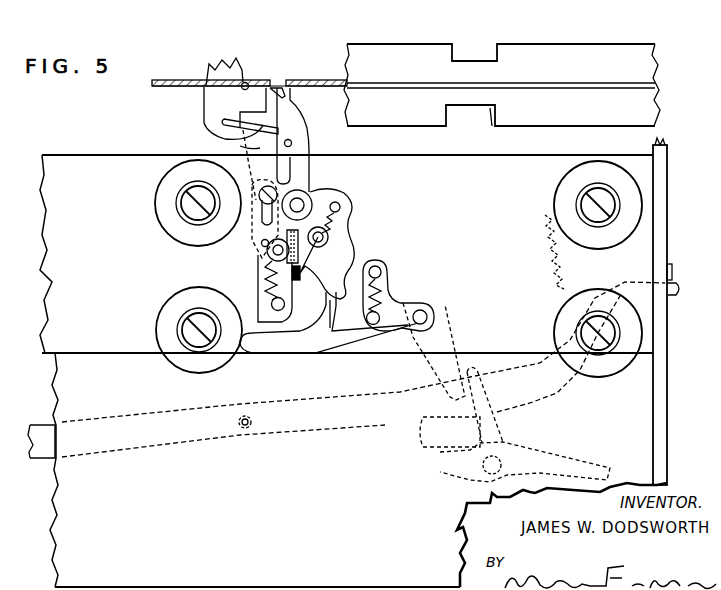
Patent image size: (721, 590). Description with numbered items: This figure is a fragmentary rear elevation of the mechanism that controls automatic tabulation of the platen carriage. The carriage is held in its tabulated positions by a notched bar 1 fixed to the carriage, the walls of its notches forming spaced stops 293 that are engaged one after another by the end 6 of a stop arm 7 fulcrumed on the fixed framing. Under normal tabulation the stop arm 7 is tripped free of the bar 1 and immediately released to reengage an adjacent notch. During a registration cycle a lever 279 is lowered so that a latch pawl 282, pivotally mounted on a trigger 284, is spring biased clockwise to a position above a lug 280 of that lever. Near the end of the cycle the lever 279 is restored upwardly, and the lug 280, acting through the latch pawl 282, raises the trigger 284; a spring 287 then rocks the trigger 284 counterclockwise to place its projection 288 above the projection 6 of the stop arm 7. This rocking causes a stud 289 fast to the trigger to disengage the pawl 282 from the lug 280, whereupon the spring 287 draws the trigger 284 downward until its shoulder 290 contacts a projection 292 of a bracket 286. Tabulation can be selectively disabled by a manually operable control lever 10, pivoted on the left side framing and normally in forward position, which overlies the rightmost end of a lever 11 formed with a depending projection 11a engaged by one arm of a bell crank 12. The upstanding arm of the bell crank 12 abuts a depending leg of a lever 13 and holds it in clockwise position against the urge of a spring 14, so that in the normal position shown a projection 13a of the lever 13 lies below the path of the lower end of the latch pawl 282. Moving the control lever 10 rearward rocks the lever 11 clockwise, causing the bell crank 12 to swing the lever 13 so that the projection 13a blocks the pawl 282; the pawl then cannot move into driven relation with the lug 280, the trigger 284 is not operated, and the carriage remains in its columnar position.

The notched bar 1 is at (591, 48).
The end of stop arm 6 is at (262, 85).
The stop arm 7 is at (205, 70).
The control lever 10 is at (674, 274).
The lever 11 is at (266, 438).
The depending projection 11a is at (415, 430).
The bell crank 12 is at (426, 462).
The lever 13 is at (276, 344).
The projection 13a is at (320, 347).
The spring 14 is at (388, 288).
The lever 279 is at (289, 230).
The lug 280 is at (298, 278).
The latch pawl 282 is at (348, 220).
The trigger 284 is at (291, 113).
The bracket 286 is at (258, 148).
The spring 287 is at (258, 274).
The projection 288 is at (290, 88).
The stud 289 is at (329, 239).
The shoulder 290 is at (303, 146).
The projection 292 is at (236, 114).
The spaced stops 293 is at (247, 81).